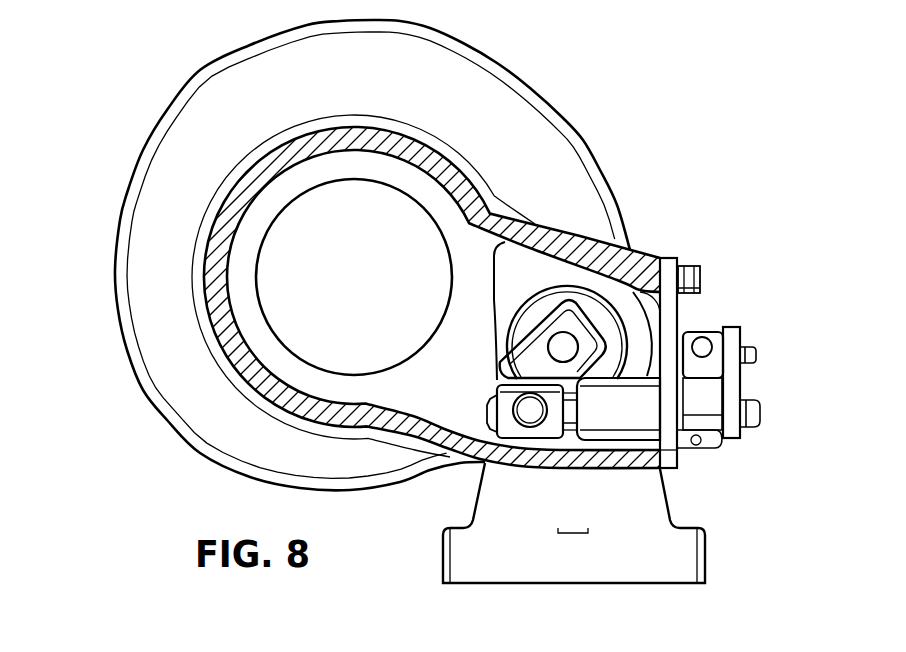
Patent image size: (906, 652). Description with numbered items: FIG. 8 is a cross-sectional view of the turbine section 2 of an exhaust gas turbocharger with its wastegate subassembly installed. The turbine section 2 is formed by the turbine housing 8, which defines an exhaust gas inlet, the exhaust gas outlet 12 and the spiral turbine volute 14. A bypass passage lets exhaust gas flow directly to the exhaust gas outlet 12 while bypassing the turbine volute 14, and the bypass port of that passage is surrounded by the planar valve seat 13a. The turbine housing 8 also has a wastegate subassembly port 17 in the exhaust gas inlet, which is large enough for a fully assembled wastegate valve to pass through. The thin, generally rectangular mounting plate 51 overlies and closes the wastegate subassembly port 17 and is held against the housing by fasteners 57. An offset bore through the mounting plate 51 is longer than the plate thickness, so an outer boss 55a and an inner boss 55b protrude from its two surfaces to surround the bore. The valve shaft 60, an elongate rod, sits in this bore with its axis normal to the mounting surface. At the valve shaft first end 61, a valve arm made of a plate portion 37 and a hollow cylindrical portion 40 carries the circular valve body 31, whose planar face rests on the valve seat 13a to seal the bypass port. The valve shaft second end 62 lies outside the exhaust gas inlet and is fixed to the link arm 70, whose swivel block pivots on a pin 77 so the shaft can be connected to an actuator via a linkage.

The turbine section 2 is at (122, 140).
The turbine housing 8 is at (568, 150).
The exhaust gas outlet 12 is at (248, 380).
The planar valve seat 13a is at (590, 276).
The turbine volute 14 is at (247, 87).
The wastegate subassembly port 17 is at (645, 290).
The valve body 31 is at (532, 310).
The plate portion 37 is at (527, 362).
The hollow cylindrical portion 40 is at (517, 437).
The mounting plate 51 is at (673, 325).
The outer boss 55a is at (717, 445).
The inner boss 55b is at (645, 468).
The fasteners 57 is at (690, 268).
The valve shaft 60 is at (573, 430).
The valve shaft first end 61 is at (527, 410).
The valve shaft second end 62 is at (752, 413).
The link arm 70 is at (735, 388).
The pin 77 is at (747, 360).